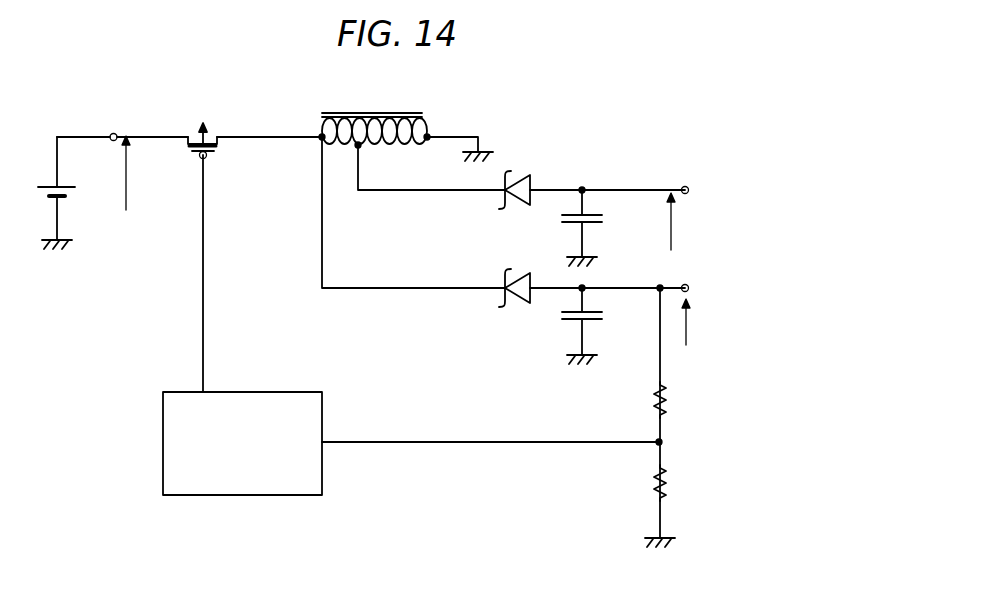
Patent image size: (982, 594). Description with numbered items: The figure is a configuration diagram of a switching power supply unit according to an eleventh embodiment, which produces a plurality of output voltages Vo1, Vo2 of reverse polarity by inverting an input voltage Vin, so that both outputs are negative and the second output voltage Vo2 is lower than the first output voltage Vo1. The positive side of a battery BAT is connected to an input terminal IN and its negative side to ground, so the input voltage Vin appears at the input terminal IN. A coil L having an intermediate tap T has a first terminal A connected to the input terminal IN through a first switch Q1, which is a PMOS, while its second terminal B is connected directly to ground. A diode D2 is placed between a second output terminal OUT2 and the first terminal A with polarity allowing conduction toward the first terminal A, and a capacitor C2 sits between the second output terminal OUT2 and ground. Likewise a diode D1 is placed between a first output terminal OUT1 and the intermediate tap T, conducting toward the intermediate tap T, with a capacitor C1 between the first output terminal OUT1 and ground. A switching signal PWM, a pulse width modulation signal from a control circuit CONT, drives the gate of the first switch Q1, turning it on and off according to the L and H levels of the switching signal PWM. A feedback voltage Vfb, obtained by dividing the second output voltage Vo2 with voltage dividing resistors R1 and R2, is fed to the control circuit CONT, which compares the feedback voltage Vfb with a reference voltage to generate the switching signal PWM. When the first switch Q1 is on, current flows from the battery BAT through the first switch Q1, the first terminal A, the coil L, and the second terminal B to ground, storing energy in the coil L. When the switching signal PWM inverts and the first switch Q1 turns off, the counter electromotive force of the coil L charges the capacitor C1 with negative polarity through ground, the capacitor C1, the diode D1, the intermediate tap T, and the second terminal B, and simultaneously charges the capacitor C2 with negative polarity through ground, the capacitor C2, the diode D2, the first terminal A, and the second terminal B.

The battery BAT is at (65, 207).
The input terminal IN is at (110, 127).
The input voltage Vin is at (139, 173).
The first switch Q1 is at (202, 127).
The coil L is at (374, 118).
The first terminal A is at (308, 125).
The second terminal B is at (438, 125).
The intermediate tap T is at (347, 159).
The diode D1 is at (514, 179).
The diode D2 is at (514, 278).
The capacitor C1 is at (595, 228).
The capacitor C2 is at (595, 326).
The first output terminal OUT1 is at (712, 191).
The second output terminal OUT2 is at (712, 289).
The first output voltage Vo1 is at (687, 221).
The second output voltage Vo2 is at (703, 322).
The voltage dividing resistor R1 is at (644, 400).
The voltage dividing resistor R2 is at (644, 483).
The control circuit CONT is at (322, 412).
The switching signal PWM is at (230, 378).
The feedback voltage Vfb is at (454, 430).